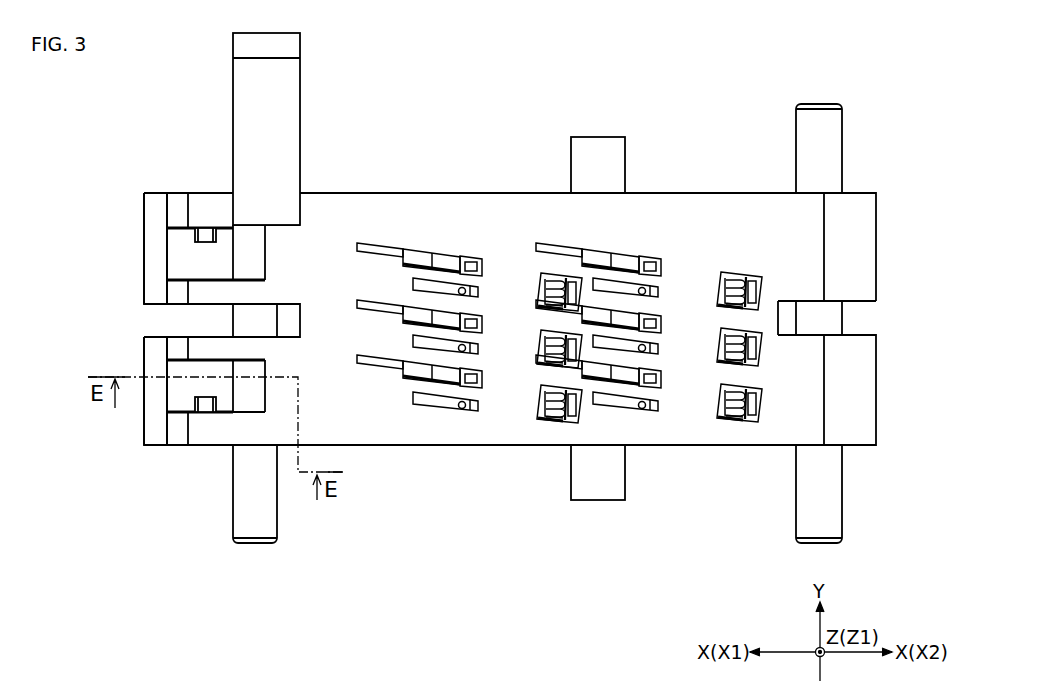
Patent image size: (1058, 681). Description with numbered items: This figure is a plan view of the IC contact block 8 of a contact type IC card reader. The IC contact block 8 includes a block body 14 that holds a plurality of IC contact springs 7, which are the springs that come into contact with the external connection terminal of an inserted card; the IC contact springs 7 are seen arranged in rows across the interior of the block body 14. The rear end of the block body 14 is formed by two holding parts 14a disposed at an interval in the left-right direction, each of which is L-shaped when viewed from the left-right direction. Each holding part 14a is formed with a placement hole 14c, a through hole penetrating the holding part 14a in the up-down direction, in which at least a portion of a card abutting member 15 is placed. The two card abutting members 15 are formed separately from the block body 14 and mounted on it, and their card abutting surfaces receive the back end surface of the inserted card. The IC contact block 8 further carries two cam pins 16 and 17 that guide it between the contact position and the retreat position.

The IC contact spring 7 is at (545, 310).
The IC contact block 8 is at (434, 192).
The block body 14 is at (510, 266).
The holding part 14a is at (153, 192).
The placement hole 14c is at (268, 268).
The card abutting member 15 is at (235, 238).
The cam pin 16 is at (252, 546).
The cam pin 17 is at (821, 103).